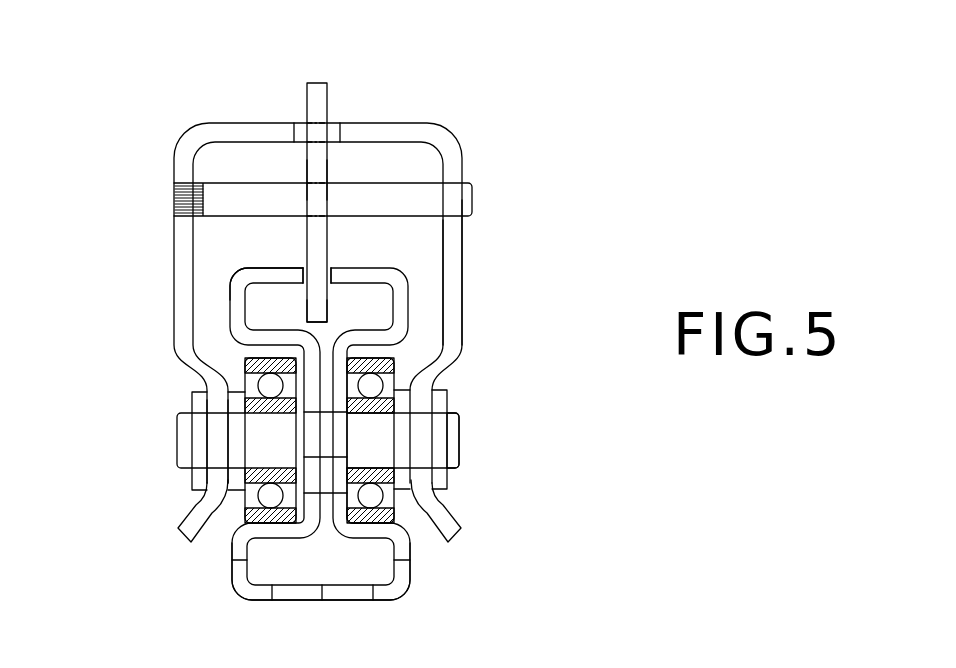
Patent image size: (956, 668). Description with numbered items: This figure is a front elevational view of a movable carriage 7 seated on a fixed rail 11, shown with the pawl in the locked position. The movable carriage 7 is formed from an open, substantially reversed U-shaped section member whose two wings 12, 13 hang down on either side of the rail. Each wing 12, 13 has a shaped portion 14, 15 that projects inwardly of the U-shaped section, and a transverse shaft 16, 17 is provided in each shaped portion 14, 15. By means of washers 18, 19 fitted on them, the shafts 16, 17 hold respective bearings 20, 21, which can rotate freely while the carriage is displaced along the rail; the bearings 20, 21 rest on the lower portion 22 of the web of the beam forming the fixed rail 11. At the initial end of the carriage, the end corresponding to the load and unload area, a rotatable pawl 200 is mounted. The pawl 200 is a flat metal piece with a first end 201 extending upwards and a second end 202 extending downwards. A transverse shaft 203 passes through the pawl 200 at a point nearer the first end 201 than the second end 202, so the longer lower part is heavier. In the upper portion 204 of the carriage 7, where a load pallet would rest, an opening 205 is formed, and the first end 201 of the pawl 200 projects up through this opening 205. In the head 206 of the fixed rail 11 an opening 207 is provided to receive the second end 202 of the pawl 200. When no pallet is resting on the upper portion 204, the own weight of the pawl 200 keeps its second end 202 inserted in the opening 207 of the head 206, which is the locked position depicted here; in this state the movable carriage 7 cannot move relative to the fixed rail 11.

The movable carriage 7 is at (445, 143).
The fixed rail 11 is at (397, 282).
The wing 12 is at (190, 540).
The wing 13 is at (457, 538).
The shaped portion 14 is at (212, 397).
The shaped portion 15 is at (422, 402).
The transverse shaft 16 is at (262, 443).
The transverse shaft 17 is at (380, 452).
The washer 18 is at (233, 486).
The washer 19 is at (437, 443).
The bearing 20 is at (247, 363).
The bearing 21 is at (398, 358).
The lower portion of the web 22 is at (362, 532).
The rotatable pawl 200 is at (337, 167).
The first end 201 is at (322, 103).
The second end 202 is at (322, 312).
The transverse shaft 203 is at (430, 205).
The upper portion 204 is at (233, 128).
The opening 205 is at (302, 125).
The head 206 is at (288, 273).
The opening 207 is at (337, 270).